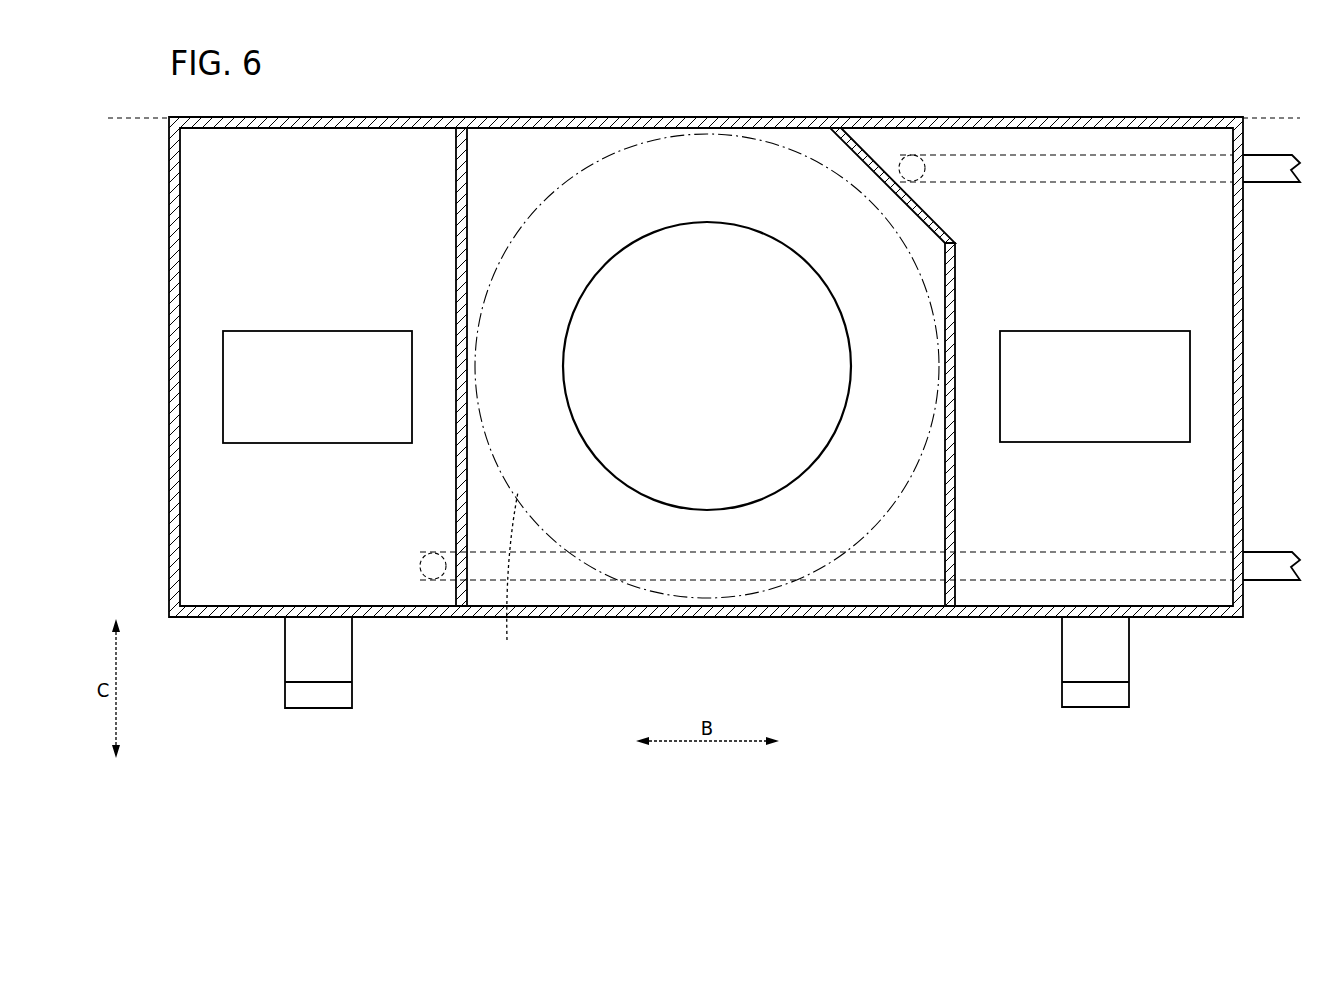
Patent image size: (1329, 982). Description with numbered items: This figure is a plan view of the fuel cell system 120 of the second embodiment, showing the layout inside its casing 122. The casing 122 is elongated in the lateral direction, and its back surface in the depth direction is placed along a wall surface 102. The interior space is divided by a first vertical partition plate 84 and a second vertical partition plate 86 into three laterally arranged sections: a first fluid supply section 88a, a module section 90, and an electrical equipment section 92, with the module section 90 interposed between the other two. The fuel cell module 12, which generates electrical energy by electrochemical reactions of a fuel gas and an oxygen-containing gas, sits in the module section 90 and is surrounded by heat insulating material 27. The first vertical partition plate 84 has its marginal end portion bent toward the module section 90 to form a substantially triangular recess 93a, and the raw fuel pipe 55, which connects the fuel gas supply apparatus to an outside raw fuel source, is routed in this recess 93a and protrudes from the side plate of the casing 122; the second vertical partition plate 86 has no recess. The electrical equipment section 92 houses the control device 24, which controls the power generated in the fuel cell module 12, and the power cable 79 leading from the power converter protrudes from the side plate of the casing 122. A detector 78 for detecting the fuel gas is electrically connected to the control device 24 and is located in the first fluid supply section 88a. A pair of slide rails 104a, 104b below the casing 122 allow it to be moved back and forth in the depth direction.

The fuel cell system 120 is at (1178, 77).
The casing 122 is at (344, 117).
The electrical equipment section 92 is at (196, 243).
The first fluid supply section 88a is at (1210, 256).
The wall surface 102 is at (1266, 117).
The second vertical partition plate 86 is at (456, 485).
The first vertical partition plate 84 is at (962, 284).
The fuel cell module 12 is at (809, 264).
The module section 90 is at (818, 147).
The recess 93a is at (870, 140).
The raw fuel pipe 55 is at (916, 156).
The power cable 79 is at (1280, 550).
The control device 24 is at (384, 330).
The detector 78 is at (1176, 330).
The heat insulating material 27 is at (507, 579).
The slide rail 104b is at (338, 655).
The slide rail 104a is at (1108, 655).